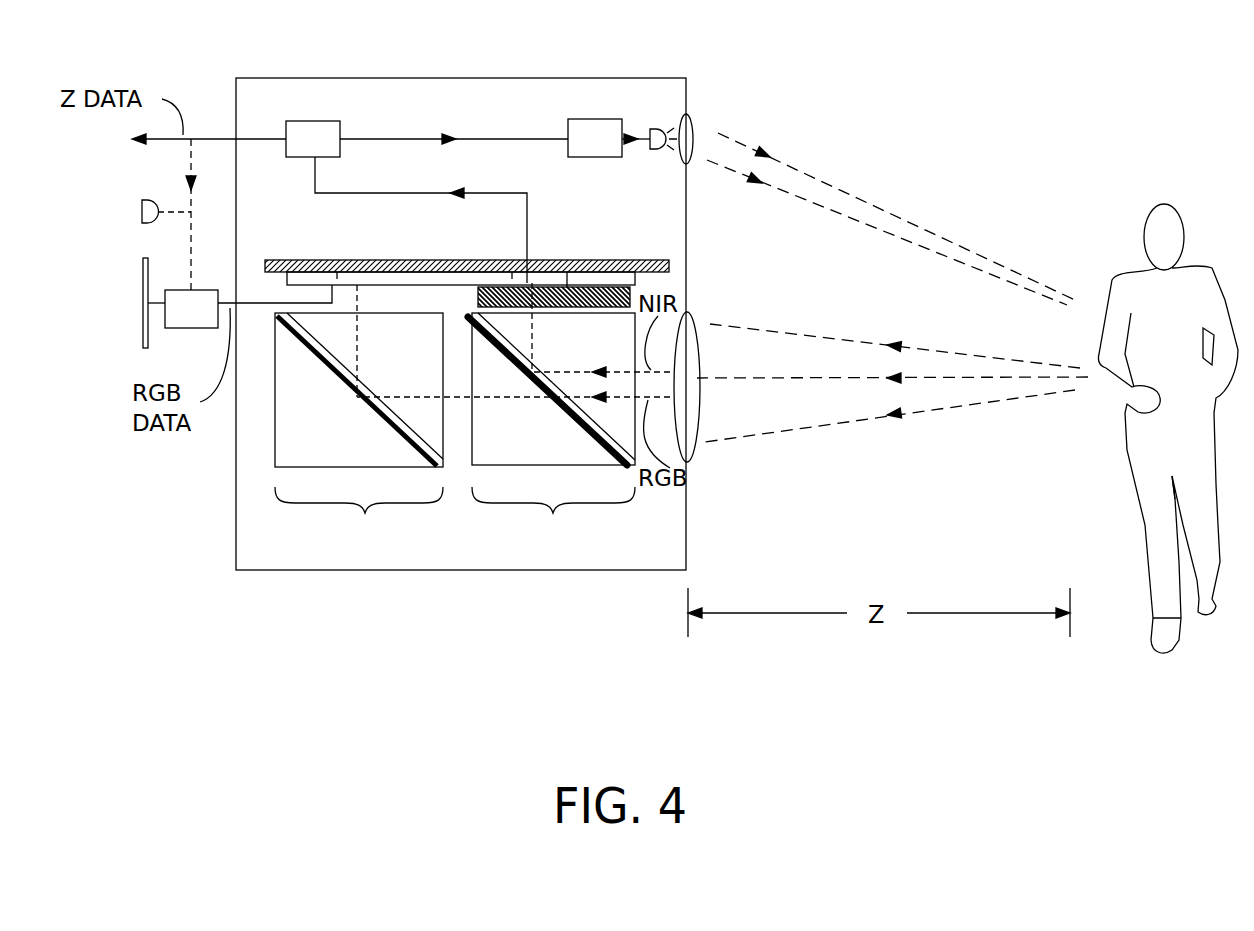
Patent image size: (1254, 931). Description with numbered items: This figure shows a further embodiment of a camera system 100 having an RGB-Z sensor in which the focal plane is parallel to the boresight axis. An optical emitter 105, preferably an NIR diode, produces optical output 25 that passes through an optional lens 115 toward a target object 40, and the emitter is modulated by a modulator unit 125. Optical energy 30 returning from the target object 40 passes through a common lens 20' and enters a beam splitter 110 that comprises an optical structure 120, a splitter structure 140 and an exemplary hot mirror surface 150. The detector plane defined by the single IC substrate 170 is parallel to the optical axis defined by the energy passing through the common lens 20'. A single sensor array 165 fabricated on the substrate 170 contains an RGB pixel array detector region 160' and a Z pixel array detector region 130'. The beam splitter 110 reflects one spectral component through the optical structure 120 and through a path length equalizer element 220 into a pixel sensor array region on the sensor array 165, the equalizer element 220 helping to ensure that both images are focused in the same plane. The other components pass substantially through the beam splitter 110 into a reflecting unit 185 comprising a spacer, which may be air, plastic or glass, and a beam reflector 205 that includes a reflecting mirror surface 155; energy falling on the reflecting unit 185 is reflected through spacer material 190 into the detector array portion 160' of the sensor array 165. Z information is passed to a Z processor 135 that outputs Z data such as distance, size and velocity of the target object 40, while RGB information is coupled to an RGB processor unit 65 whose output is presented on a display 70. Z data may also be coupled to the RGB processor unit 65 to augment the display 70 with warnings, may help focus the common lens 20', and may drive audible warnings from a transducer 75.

The camera system 100 is at (652, 55).
The transducer 75 is at (158, 203).
The display 70 is at (140, 275).
The RGB processor unit 65 is at (210, 322).
The Z processor 135 is at (336, 153).
The modulator unit 125 is at (618, 152).
The optical emitter 105 is at (657, 152).
The lens 115 is at (693, 127).
The optical output 25 is at (898, 218).
The IC substrate 170 is at (432, 258).
The RGB pixel array detector region 160' is at (445, 254).
The sensor array 165 is at (510, 278).
The Z pixel array detector region 130' is at (575, 263).
The path length equalizer element 220 is at (567, 287).
The reflecting unit 185 is at (359, 433).
The reflecting mirror surface 155 is at (322, 365).
The spacer material 190 is at (424, 360).
The beam reflector 205 is at (370, 450).
The beam splitter 110 is at (553, 434).
The hot mirror surface 150 is at (512, 366).
The optical structure 120 is at (603, 357).
The splitter structure 140 is at (547, 431).
The common lens 20' is at (715, 387).
The optical energy 30 is at (822, 337).
The target object 40 is at (1134, 274).